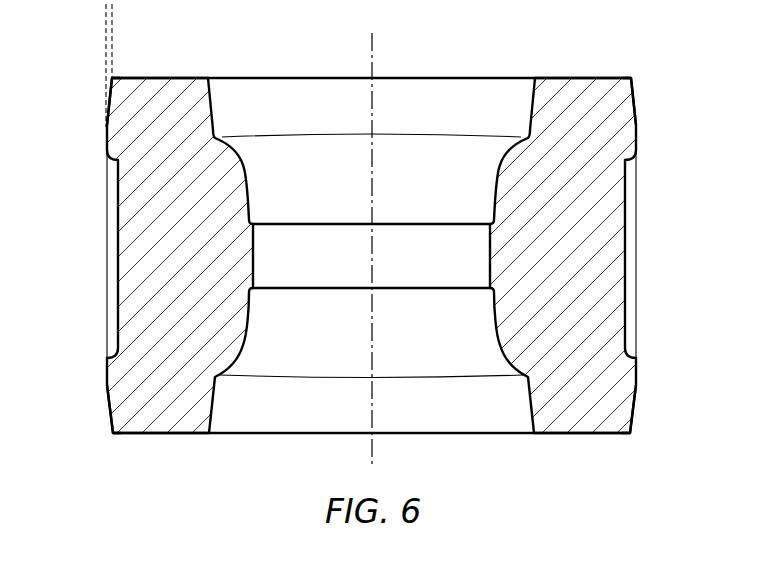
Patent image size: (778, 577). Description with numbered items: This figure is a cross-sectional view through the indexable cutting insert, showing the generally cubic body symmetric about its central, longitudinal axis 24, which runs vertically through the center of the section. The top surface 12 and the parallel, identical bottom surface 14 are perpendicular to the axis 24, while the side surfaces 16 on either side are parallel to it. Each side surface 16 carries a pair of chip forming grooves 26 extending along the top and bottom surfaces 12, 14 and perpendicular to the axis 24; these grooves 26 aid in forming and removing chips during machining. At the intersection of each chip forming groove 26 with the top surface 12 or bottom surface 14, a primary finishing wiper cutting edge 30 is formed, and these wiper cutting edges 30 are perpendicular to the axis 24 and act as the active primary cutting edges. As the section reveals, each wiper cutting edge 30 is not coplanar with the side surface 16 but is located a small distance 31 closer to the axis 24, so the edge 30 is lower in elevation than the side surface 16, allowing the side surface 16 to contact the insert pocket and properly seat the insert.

The top surface 12 is at (273, 70).
The bottom surface 14 is at (469, 449).
The side surface 16 is at (92, 240).
The central, longitudinal axis 24 is at (374, 55).
The chip forming groove 26 is at (108, 106).
The primary finishing wiper cutting edge 30 is at (112, 78).
The small distance 31 is at (120, 15).